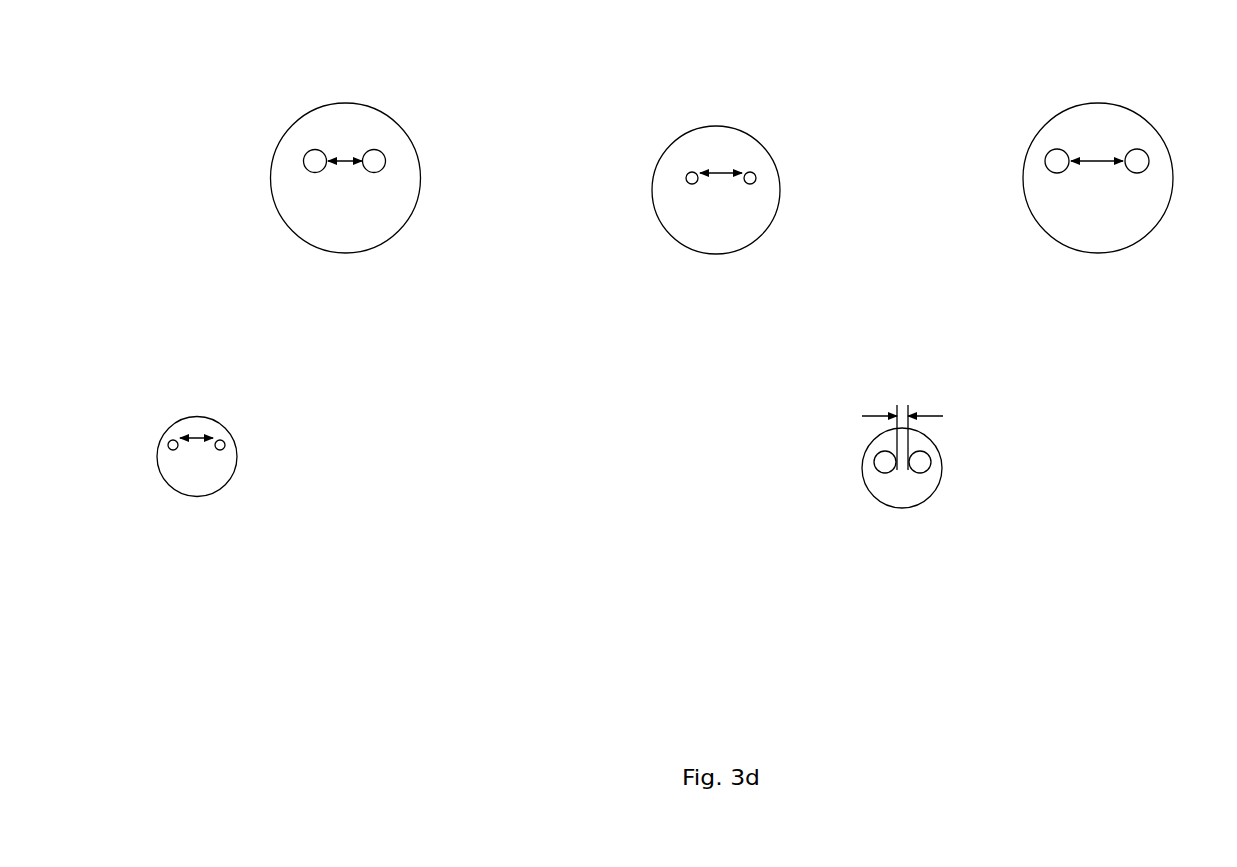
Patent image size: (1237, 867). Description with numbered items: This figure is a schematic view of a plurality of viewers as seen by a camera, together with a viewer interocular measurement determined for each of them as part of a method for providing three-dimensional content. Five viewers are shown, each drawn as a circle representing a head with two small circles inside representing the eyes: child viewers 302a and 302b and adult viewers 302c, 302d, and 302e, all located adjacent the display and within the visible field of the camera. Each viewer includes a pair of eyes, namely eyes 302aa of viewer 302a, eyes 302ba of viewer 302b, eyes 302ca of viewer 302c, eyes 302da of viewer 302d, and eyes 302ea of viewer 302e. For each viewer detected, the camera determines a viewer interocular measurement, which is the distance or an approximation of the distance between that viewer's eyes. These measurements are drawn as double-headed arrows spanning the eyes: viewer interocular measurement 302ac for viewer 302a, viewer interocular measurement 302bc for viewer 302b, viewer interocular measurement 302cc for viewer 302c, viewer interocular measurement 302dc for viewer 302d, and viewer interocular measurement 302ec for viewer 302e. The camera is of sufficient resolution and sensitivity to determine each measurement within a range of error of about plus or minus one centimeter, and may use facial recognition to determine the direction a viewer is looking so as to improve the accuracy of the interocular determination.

The viewer 302a is at (895, 510).
The pair of eyes 302aa is at (883, 472).
The viewer interocular measurement 302ac is at (929, 413).
The viewer 302b is at (192, 498).
The pair of eyes 302ba is at (178, 450).
The viewer interocular measurement 302bc is at (200, 437).
The viewer 302c is at (1092, 255).
The pair of eyes 302ca is at (1058, 173).
The viewer interocular measurement 302cc is at (1089, 158).
The viewer 302d is at (710, 255).
The pair of eyes 302da is at (697, 183).
The viewer interocular measurement 302dc is at (720, 172).
The viewer 302e is at (339, 255).
The pair of eyes 302ea is at (317, 173).
The viewer interocular measurement 302ec is at (352, 158).